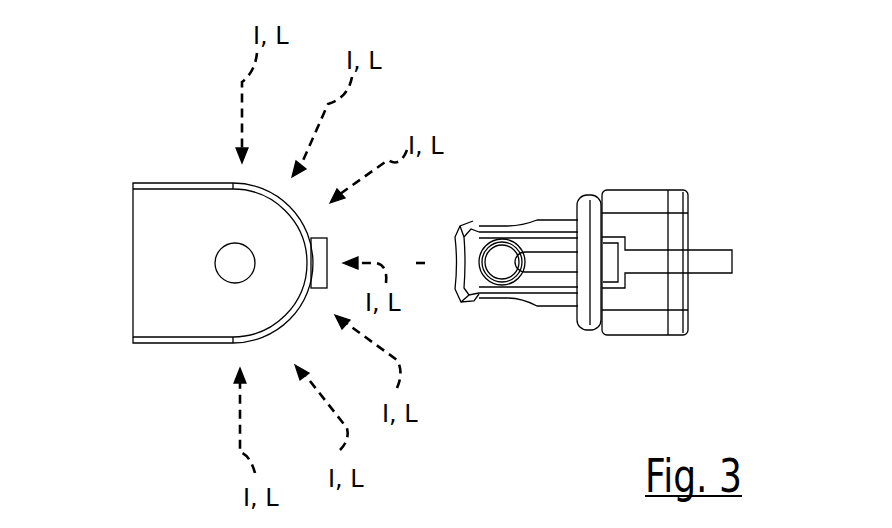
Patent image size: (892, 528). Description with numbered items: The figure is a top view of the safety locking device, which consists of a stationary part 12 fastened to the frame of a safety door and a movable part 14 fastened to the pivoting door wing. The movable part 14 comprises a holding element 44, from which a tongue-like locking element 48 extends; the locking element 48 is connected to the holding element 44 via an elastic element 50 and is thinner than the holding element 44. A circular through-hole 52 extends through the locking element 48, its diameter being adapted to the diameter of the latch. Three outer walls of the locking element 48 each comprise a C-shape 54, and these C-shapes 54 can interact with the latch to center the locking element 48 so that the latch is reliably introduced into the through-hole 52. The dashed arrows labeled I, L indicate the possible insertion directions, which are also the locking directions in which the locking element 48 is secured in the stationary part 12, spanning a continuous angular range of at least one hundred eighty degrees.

The stationary part 12 is at (121, 155).
The movable part 14 is at (658, 157).
The holding element 44 is at (675, 228).
The locking element 48 is at (548, 218).
The elastic element 50 is at (588, 327).
The through-hole 52 is at (497, 253).
The C-shape 54 is at (492, 230).